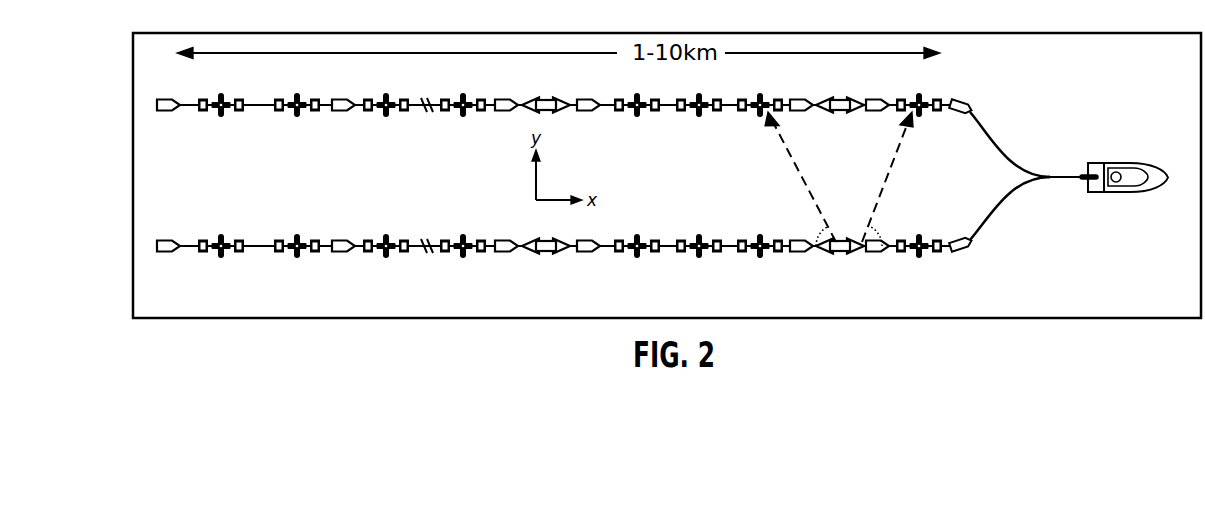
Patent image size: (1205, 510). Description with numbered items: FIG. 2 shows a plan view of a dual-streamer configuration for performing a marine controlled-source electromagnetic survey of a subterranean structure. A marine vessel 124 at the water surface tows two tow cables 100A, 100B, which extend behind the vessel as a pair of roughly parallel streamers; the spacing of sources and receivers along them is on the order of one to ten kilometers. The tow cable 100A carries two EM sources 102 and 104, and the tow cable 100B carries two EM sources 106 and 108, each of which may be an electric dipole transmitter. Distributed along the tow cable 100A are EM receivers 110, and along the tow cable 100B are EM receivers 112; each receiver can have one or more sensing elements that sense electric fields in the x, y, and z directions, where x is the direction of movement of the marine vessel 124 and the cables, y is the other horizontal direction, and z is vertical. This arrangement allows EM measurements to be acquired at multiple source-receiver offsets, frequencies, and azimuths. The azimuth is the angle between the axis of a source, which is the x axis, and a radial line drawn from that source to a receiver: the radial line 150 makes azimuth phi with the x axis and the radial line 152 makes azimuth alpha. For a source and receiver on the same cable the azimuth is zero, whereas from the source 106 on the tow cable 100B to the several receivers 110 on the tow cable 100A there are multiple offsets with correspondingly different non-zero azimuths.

The tow cable 100A is at (998, 145).
The tow cable 100B is at (1007, 200).
The EM source 102 is at (842, 97).
The EM source 104 is at (547, 95).
The EM source 106 is at (840, 256).
The EM source 108 is at (548, 256).
The EM receiver 110 is at (297, 118).
The EM receiver 112 is at (297, 233).
The marine vessel 124 is at (1127, 163).
The radial line 150 is at (797, 157).
The radial line 152 is at (895, 160).